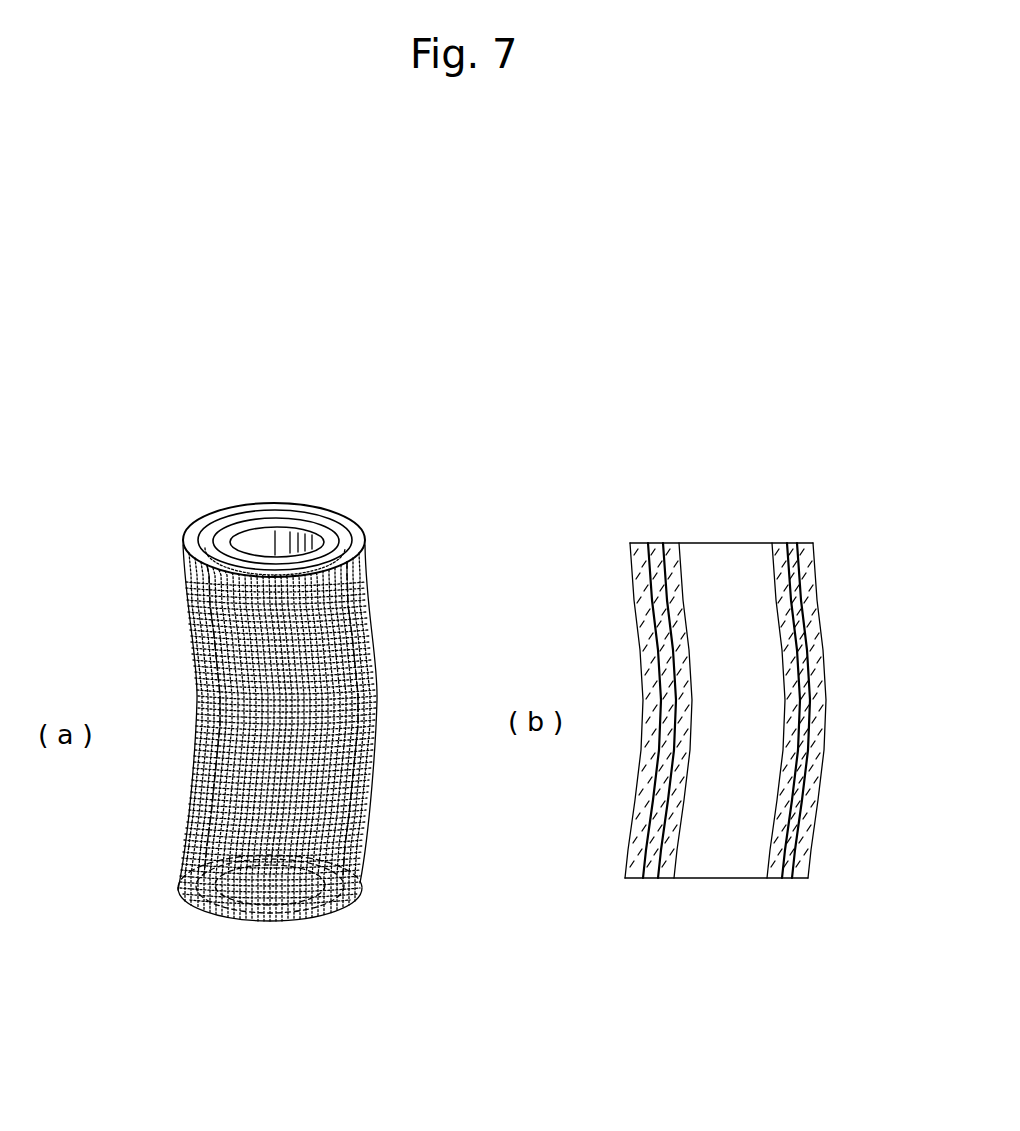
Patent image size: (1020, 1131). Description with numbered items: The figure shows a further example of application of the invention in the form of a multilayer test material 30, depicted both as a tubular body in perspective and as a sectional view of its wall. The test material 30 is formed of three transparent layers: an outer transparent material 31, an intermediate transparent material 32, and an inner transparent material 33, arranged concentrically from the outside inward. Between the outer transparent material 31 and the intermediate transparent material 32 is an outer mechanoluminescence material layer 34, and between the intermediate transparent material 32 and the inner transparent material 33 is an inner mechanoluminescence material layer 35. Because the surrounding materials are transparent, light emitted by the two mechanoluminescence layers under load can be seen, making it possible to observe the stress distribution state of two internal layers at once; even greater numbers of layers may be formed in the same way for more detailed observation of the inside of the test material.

The test material 30 is at (367, 512).
The outer transparent material 31 is at (188, 540).
The intermediate transparent material 32 is at (207, 541).
The inner transparent material 33 is at (227, 543).
The outer mechanoluminescence material layer 34 is at (202, 543).
The inner mechanoluminescence material layer 35 is at (223, 540).